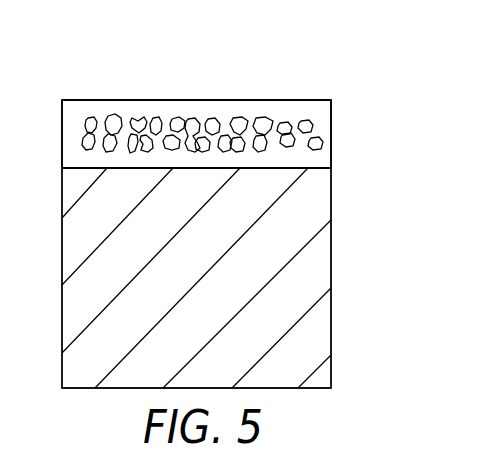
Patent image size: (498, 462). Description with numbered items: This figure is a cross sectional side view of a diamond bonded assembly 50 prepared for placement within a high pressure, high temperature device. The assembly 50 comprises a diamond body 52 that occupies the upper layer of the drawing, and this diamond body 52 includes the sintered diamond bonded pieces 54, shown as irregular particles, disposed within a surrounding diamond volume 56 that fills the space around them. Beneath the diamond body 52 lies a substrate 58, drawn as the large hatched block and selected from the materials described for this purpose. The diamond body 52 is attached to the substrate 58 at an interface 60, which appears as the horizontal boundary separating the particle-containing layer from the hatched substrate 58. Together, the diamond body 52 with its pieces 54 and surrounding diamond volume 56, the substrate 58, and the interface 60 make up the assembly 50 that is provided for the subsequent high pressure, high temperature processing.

The diamond bonded assembly 50 is at (308, 70).
The diamond body 52 is at (202, 100).
The sintered diamond bonded pieces 54 is at (113, 110).
The surrounding diamond volume 56 is at (320, 117).
The substrate 58 is at (308, 269).
The interface 60 is at (277, 168).